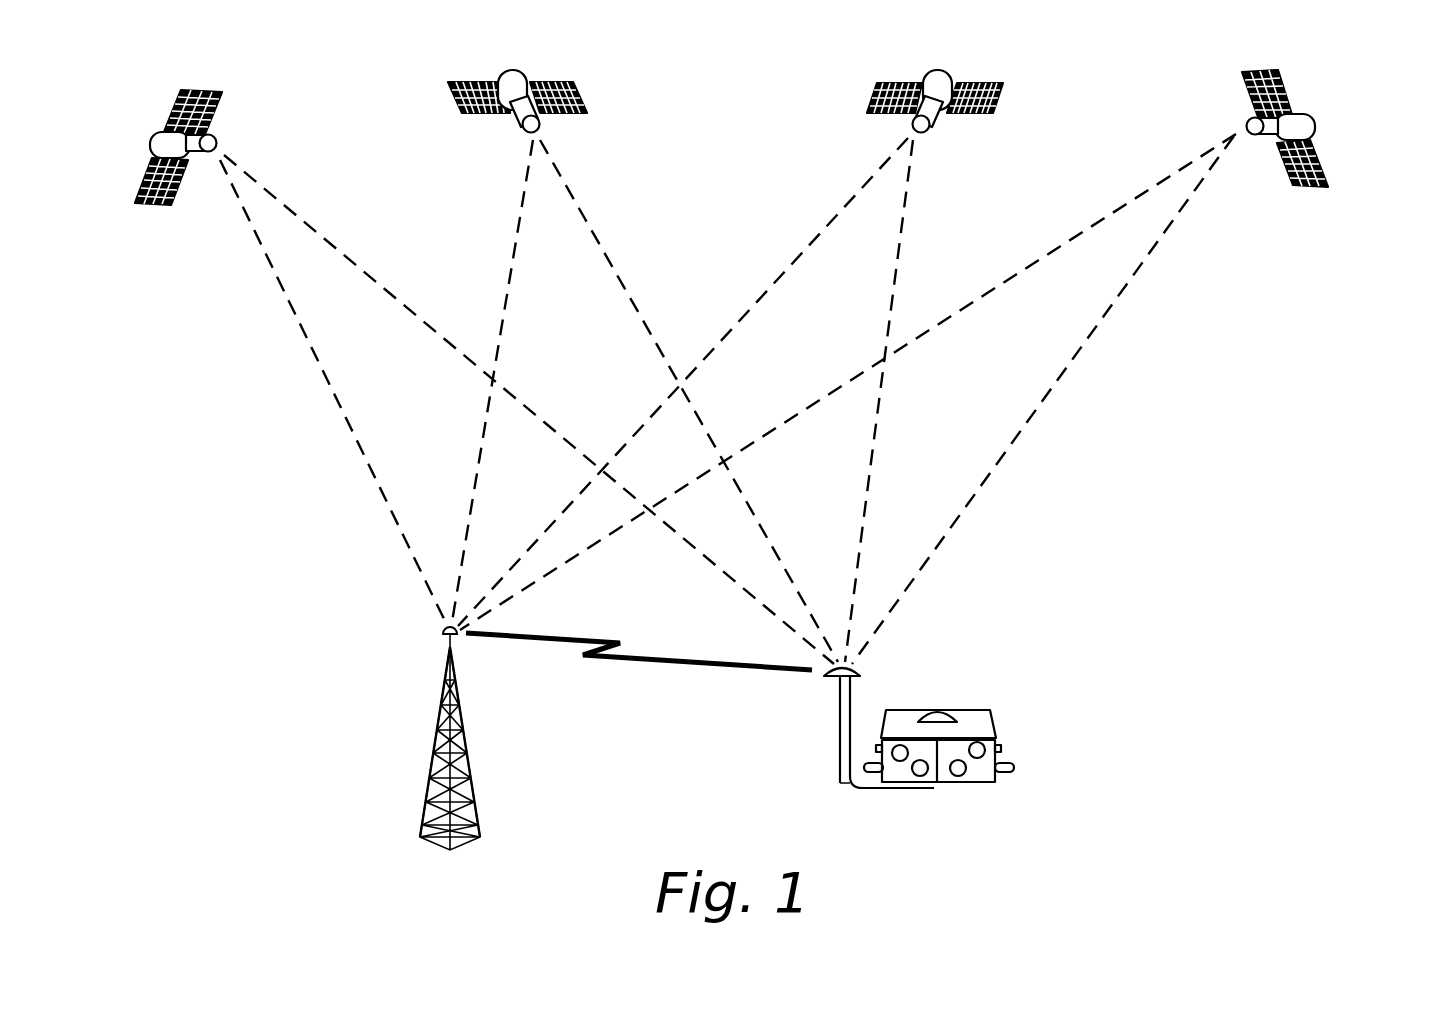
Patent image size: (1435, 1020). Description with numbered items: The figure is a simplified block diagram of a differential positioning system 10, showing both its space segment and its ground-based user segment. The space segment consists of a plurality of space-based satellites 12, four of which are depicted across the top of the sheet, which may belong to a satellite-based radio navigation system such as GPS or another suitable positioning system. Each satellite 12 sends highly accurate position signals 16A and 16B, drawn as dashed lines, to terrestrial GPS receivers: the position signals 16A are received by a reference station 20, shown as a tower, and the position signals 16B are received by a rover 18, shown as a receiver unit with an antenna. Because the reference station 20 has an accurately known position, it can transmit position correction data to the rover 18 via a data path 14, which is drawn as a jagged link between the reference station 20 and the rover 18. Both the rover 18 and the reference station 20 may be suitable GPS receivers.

The differential positioning system 10 is at (338, 620).
The satellite 12 is at (212, 122).
The data path 14 is at (658, 657).
The position signal 16A is at (280, 283).
The position signal 16B is at (278, 205).
The rover 18 is at (972, 710).
The reference station 20 is at (472, 762).